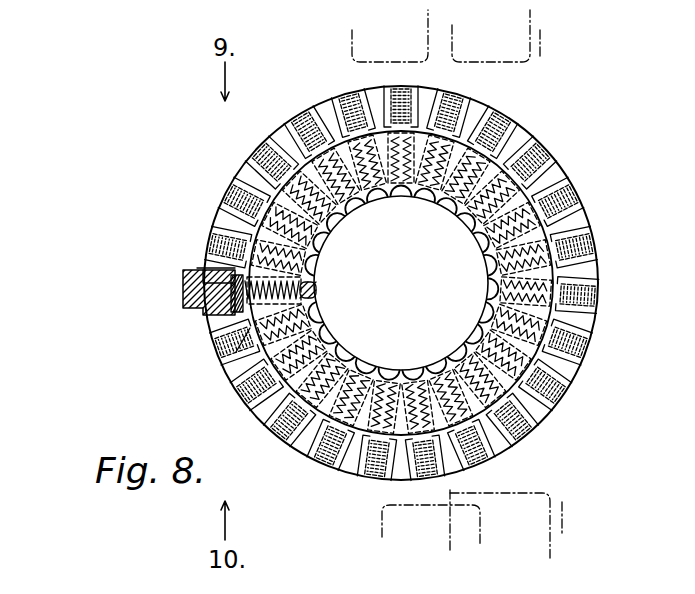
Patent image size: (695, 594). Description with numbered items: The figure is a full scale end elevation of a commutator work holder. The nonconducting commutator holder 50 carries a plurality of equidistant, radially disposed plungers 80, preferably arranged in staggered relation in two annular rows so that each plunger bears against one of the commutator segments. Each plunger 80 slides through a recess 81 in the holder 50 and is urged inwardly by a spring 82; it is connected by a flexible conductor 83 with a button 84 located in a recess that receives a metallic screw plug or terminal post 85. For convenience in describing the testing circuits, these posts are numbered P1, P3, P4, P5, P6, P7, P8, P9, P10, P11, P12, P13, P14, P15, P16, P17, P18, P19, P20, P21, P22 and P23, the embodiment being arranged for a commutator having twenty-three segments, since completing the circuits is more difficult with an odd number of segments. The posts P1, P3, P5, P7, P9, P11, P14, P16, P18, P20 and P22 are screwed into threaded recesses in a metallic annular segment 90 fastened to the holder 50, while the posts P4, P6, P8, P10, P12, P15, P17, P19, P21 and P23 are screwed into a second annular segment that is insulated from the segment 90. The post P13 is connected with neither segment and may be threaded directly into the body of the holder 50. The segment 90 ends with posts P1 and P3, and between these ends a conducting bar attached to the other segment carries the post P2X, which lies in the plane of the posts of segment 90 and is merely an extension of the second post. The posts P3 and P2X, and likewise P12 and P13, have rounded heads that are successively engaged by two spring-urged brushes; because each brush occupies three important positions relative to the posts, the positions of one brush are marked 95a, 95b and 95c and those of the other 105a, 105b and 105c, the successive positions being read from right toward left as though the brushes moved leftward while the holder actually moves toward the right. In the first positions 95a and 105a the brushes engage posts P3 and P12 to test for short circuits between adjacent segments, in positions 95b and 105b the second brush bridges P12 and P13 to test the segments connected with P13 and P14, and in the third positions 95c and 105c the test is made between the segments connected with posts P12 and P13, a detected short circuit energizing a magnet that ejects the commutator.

The commutator holder 50 is at (243, 332).
The plunger 80 is at (316, 283).
The recess 81 is at (236, 352).
The spring 82 is at (318, 296).
The flexible conductor 83 is at (247, 317).
The button 84 is at (183, 280).
The terminal post 85 is at (183, 300).
The metallic annular segment 90 is at (197, 268).
The first position of brush 95 95a is at (542, 43).
The second position of brush 95 95b is at (527, 17).
The third position of brush 95 95c is at (448, 40).
The first position of brush 105 105a is at (565, 500).
The second position of brush 105 105b is at (548, 548).
The third position of brush 105 105c is at (480, 527).
The terminal post P1 is at (360, 137).
The post P2x P2X is at (401, 131).
The terminal post P3 is at (441, 137).
The terminal post P4 is at (480, 153).
The terminal post P5 is at (511, 179).
The terminal post P6 is at (535, 213).
The terminal post P7 is at (549, 252).
The terminal post P8 is at (552, 293).
The terminal post P9 is at (544, 334).
The terminal post P10 is at (524, 371).
The terminal post P11 is at (496, 400).
The terminal post P12 is at (461, 421).
The terminal post P13 is at (421, 433).
The terminal post P14 is at (380, 433).
The terminal post P15 is at (340, 421).
The terminal post P16 is at (305, 400).
The terminal post P17 is at (277, 371).
The terminal post P18 is at (258, 334).
The terminal post P19 is at (204, 315).
The terminal post P20 is at (253, 252).
The terminal post P21 is at (266, 213).
The terminal post P22 is at (290, 179).
The terminal post P23 is at (322, 153).